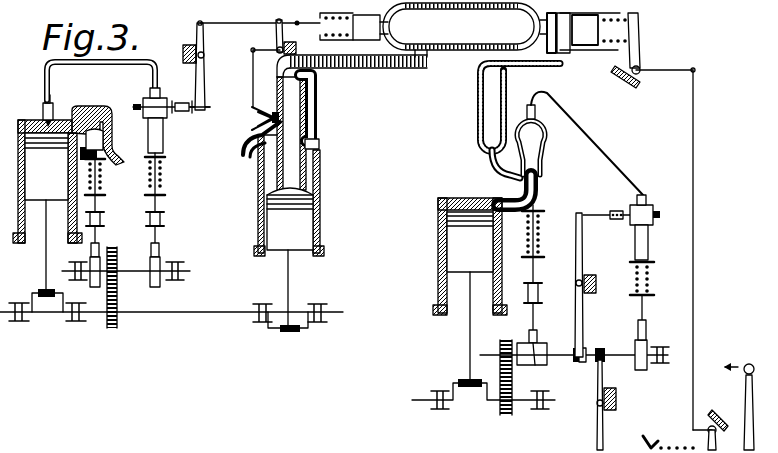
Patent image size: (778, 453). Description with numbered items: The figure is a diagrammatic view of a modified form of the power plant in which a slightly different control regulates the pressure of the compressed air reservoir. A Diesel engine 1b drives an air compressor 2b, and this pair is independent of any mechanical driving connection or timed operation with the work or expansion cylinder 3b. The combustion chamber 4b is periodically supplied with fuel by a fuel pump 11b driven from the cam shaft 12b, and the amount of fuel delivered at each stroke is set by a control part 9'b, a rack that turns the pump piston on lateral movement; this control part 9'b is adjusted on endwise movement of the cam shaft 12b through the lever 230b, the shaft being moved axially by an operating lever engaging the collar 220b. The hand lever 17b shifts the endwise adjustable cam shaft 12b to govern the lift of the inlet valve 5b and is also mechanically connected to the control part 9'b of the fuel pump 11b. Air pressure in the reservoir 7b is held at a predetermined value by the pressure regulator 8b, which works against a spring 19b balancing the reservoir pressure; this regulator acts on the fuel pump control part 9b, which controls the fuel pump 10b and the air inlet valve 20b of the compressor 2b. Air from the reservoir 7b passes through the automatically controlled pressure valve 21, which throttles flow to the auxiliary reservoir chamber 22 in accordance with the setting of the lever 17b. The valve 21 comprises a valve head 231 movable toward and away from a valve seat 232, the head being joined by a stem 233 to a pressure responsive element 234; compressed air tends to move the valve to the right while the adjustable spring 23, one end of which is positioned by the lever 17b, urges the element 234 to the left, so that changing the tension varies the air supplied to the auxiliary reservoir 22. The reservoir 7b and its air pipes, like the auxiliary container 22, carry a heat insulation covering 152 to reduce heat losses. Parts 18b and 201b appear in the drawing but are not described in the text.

The Diesel engine 1b is at (68, 198).
The air compressor 2b is at (289, 201).
The work or expansion cylinder 3b is at (470, 289).
The combustion chamber 4b is at (541, 134).
The inlet valve 5b is at (540, 190).
The air reservoir 7b is at (461, 26).
The pressure regulator 8b is at (375, 40).
The fuel pump control part 9b is at (205, 110).
The control part 9'b is at (620, 231).
The fuel pump 10b is at (153, 106).
The fuel pump 11b is at (645, 212).
The cam shaft 12b is at (618, 357).
The hand lever 17b is at (749, 412).
The lever 18b is at (597, 430).
The spring 19b is at (352, 40).
The air inlet valve 20b is at (279, 160).
The valve lever 201b is at (250, 115).
The pressure valve 21 is at (588, 42).
The auxiliary reservoir chamber 22 is at (488, 97).
The spring 23 is at (628, 42).
The heat insulation covering 152 is at (495, 13).
The collar 220b is at (600, 348).
The lever 230b is at (572, 228).
The valve head 231 is at (552, 14).
The valve seat 232 is at (562, 48).
The stem 233 is at (630, 76).
The pressure responsive element 234 is at (640, 30).